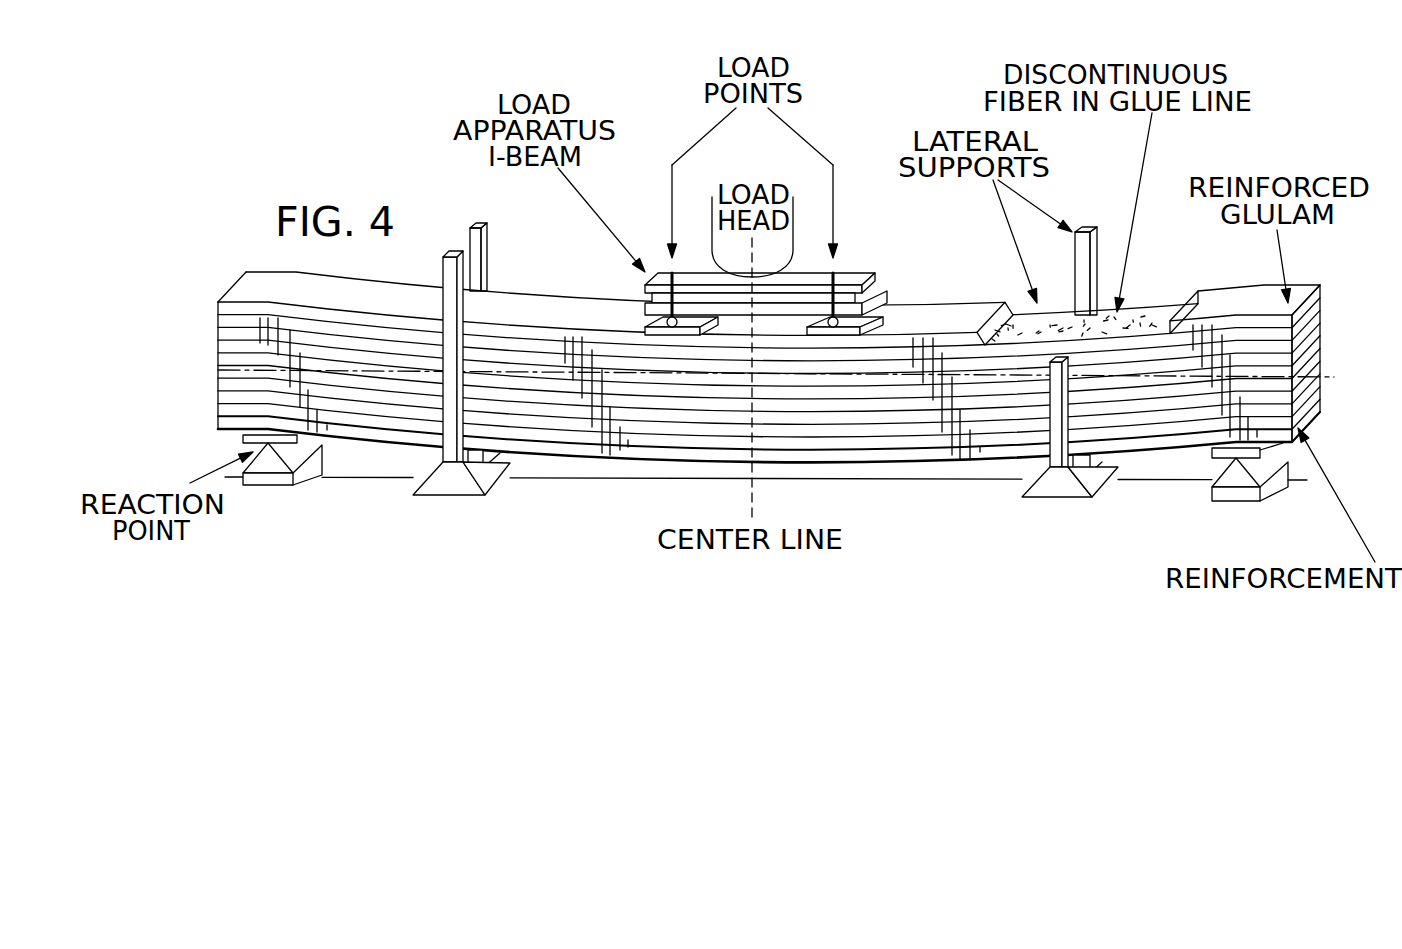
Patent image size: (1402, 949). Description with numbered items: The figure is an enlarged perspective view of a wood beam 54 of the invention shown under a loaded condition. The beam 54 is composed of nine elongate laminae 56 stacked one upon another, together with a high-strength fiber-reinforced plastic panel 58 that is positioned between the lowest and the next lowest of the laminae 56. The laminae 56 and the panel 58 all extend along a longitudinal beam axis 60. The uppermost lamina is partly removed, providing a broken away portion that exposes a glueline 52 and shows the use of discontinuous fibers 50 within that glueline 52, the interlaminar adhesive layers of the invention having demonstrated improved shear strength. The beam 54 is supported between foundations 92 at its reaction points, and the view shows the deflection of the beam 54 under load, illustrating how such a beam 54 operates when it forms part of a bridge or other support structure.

The discontinuous fibers 50 is at (1145, 320).
The glueline 52 is at (218, 418).
The beam 54 is at (1226, 288).
The elongate laminae 56 is at (218, 314).
The high-strength fiber-reinforced plastic panel 58 is at (1305, 414).
The longitudinal beam axis 60 is at (1334, 379).
The foundations 92 is at (268, 478).